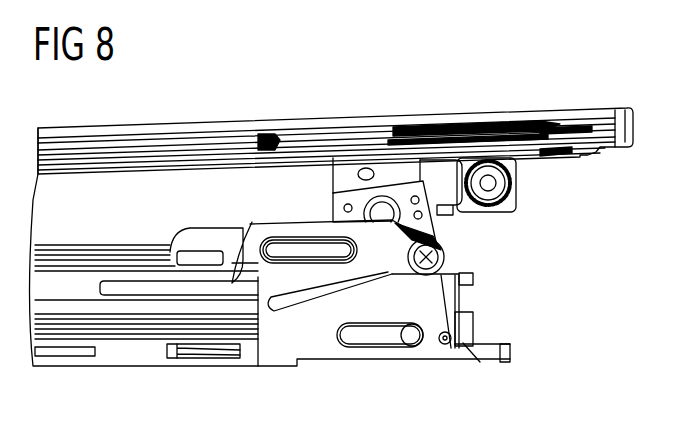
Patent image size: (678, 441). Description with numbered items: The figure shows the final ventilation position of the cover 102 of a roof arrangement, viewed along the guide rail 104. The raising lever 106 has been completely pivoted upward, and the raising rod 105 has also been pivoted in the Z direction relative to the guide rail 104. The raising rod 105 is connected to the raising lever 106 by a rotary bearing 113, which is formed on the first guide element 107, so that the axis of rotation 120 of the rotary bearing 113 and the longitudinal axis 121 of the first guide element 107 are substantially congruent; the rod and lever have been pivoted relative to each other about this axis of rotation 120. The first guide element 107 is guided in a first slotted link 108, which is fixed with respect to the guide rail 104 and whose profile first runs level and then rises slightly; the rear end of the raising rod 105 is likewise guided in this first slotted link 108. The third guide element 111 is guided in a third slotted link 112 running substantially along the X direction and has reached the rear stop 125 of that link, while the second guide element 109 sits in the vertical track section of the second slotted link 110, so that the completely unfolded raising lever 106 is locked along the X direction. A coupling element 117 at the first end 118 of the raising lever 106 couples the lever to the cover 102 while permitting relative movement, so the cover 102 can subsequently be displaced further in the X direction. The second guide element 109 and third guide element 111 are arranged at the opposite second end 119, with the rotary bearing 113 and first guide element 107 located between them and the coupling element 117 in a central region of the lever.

The cover 102 is at (325, 118).
The guide rail 104 is at (327, 350).
The raising rod 105 is at (260, 238).
The raising lever 106 is at (447, 297).
The first guide element 107 is at (450, 242).
The first slotted link 108 is at (297, 313).
The second guide element 109 is at (480, 362).
The second slotted link 110 is at (455, 322).
The third guide element 111 is at (416, 350).
The third slotted link 112 is at (392, 346).
The rotary bearing 113 is at (410, 258).
The coupling element 117 is at (422, 203).
The first end 118 is at (378, 200).
The second end 119 is at (512, 344).
The axis of rotation 120 is at (445, 260).
The longitudinal axis 121 is at (445, 260).
The rear stop 125 is at (428, 348).